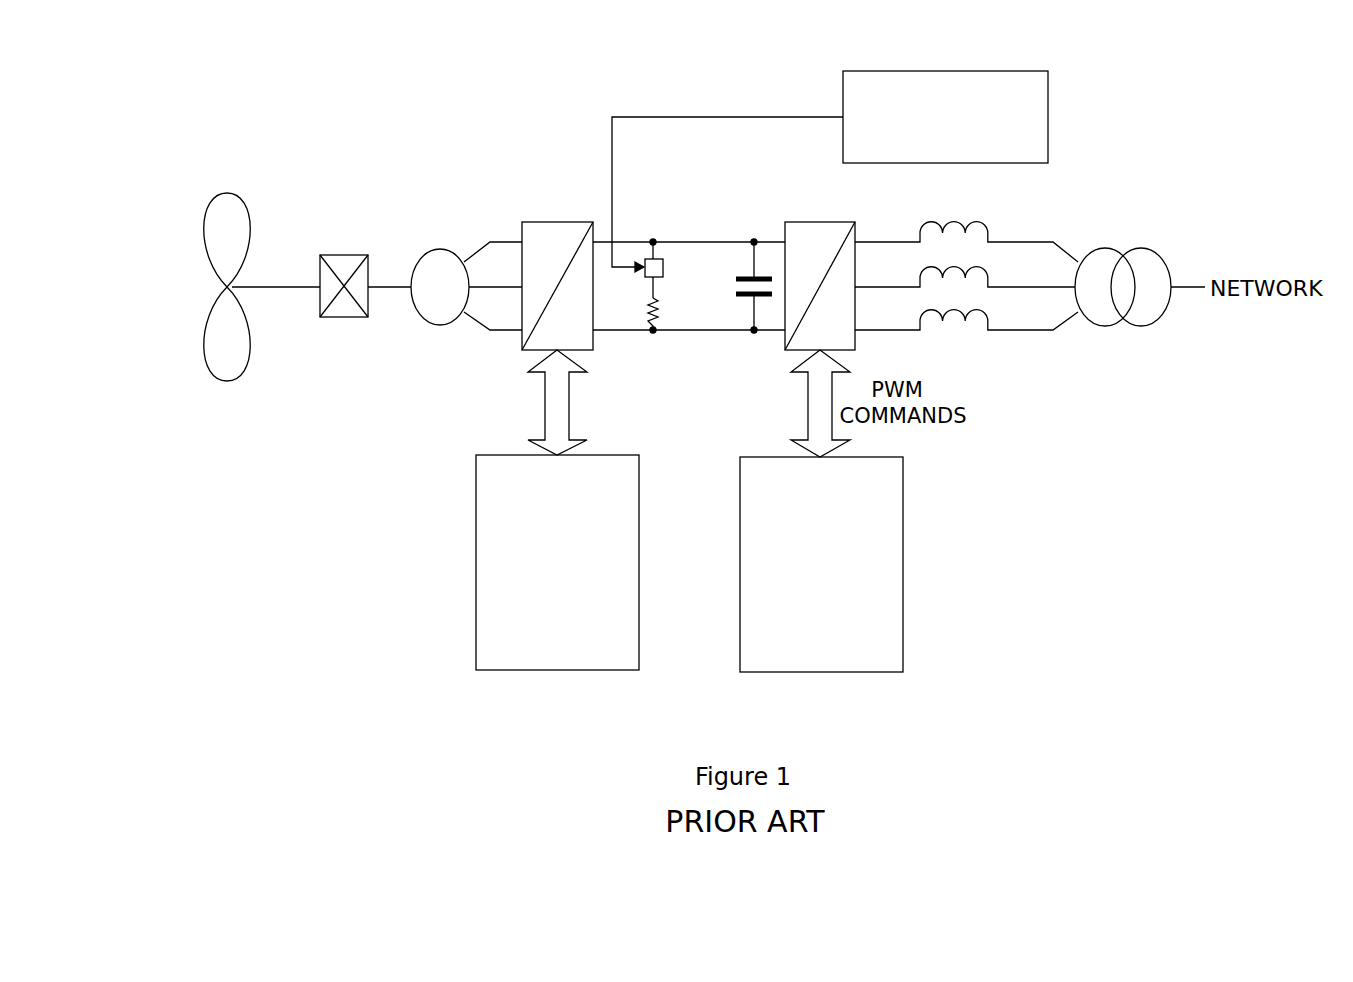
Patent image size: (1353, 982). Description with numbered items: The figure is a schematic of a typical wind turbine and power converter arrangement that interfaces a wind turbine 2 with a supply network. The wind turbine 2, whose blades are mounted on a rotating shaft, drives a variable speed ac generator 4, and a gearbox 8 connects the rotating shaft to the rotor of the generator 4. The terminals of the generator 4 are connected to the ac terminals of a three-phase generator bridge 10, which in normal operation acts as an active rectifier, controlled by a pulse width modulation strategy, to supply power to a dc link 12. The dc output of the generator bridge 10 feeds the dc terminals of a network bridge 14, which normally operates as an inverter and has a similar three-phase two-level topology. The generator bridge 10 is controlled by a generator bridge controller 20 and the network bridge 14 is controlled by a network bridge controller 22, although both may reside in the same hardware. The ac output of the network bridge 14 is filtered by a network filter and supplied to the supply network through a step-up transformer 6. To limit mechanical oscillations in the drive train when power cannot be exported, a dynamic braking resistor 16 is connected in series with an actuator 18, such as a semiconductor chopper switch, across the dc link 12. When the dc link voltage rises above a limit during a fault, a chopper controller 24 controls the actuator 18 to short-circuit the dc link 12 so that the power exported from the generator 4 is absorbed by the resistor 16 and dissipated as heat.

The wind turbine 2 is at (233, 233).
The variable speed ac generator 4 is at (432, 278).
The step-up transformer 6 is at (1097, 258).
The gearbox 8 is at (343, 305).
The generator bridge 10 is at (540, 228).
The dc link 12 is at (718, 226).
The network bridge 14 is at (805, 230).
The dynamic braking resistor 16 is at (656, 320).
The actuator 18 is at (659, 262).
The generator bridge controller 20 is at (476, 565).
The network bridge controller 22 is at (903, 597).
The chopper controller 24 is at (960, 71).